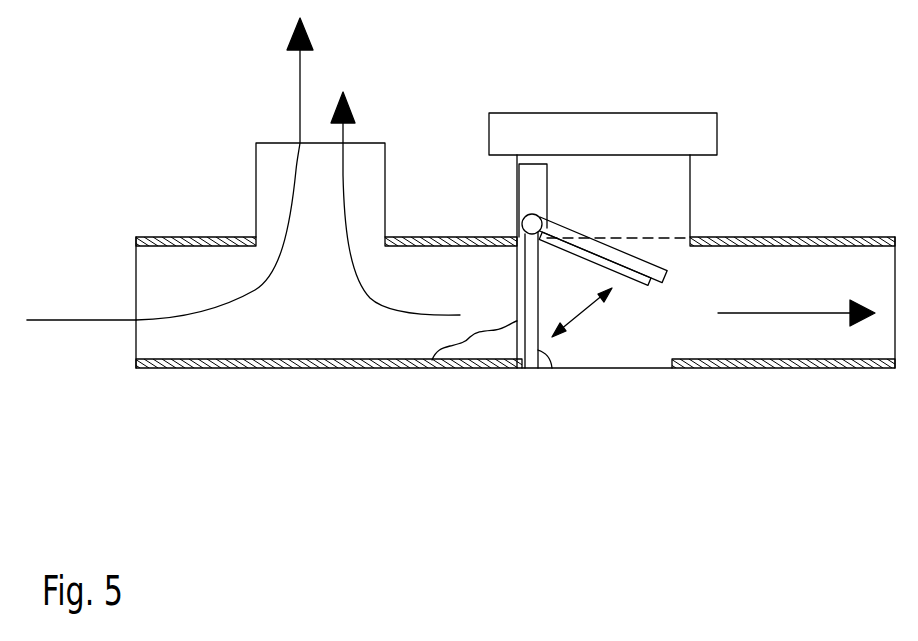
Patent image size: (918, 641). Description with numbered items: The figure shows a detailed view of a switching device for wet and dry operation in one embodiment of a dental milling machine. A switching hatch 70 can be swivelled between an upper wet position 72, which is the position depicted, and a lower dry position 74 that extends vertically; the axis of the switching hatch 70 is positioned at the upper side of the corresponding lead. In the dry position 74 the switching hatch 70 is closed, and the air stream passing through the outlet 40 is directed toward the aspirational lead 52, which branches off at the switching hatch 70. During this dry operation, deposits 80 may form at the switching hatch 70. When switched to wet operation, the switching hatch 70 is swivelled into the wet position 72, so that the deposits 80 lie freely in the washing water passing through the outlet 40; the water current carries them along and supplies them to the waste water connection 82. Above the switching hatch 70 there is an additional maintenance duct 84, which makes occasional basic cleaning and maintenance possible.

The outlet 40 is at (208, 370).
The aspirational lead 52 is at (298, 70).
The switching hatch 70 is at (538, 290).
The wet position 72 is at (637, 258).
The dry position 74 is at (553, 367).
The deposits 80 is at (492, 345).
The waste water connection 82 is at (823, 340).
The maintenance duct 84 is at (677, 177).